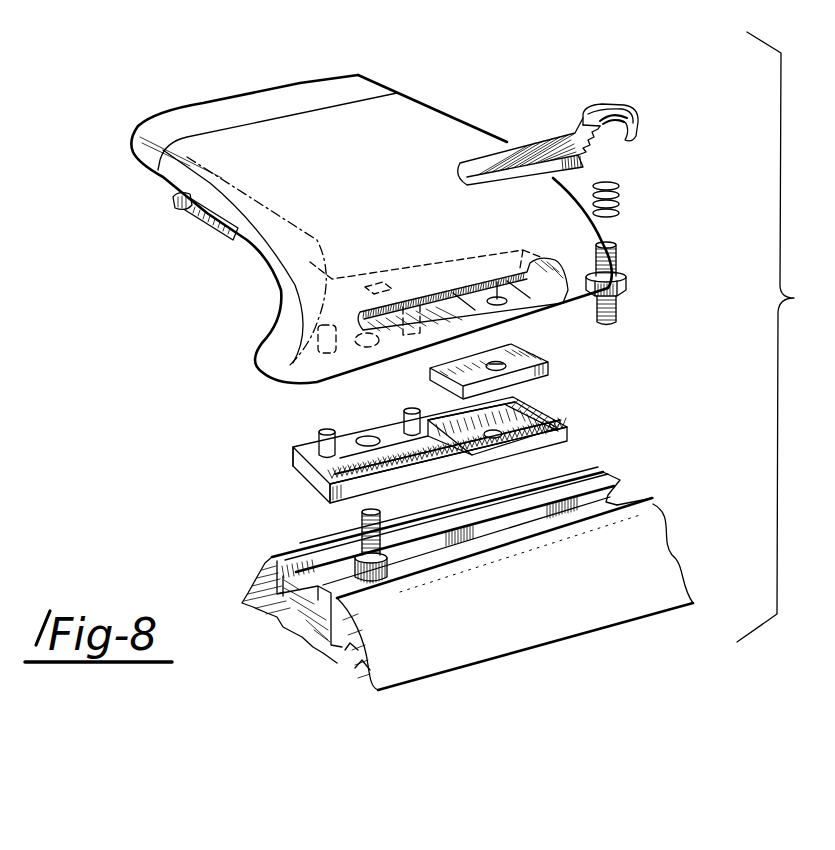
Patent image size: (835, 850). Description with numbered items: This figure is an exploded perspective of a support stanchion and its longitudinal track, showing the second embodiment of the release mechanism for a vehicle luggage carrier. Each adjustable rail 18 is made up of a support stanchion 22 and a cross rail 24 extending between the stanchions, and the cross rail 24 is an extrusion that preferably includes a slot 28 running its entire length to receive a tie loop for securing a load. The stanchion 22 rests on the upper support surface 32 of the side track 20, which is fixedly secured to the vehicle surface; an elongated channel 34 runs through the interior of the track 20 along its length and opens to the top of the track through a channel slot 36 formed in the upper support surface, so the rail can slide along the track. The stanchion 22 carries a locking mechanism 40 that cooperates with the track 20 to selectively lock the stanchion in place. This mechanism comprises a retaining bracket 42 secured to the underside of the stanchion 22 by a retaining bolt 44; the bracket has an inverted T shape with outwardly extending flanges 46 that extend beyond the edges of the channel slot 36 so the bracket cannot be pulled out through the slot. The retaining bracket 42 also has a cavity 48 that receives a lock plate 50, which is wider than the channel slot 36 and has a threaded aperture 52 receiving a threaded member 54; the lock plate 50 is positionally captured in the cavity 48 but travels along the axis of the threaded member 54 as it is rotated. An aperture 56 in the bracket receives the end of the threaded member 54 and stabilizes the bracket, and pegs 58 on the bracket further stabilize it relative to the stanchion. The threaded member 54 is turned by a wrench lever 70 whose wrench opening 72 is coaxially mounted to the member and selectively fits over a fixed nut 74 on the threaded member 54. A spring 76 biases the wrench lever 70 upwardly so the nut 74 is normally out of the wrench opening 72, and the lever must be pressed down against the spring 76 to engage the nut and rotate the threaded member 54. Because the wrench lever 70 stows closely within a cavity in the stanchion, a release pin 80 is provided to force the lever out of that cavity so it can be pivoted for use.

The adjustable rail 18 is at (357, 68).
The side track 20 is at (690, 568).
The support stanchion 22 is at (442, 127).
The cross rail 24 is at (187, 115).
The slot 28 is at (441, 294).
The upper support surface 32 is at (607, 473).
The elongated channel 34 is at (312, 613).
The channel slot 36 is at (627, 503).
The locking mechanism 40 is at (632, 410).
The retaining bracket 42 is at (292, 465).
The retaining bolt 44 is at (397, 570).
The flanges 46 is at (282, 453).
The cavity 48 is at (527, 440).
The lock plate 50 is at (550, 372).
The threaded aperture 52 is at (432, 372).
The threaded member 54 is at (517, 260).
The aperture 56 is at (493, 445).
The pegs 58 is at (400, 412).
The wrench lever 70 is at (543, 123).
The wrench opening 72 is at (623, 141).
The fixed nut 74 is at (628, 280).
The spring 76 is at (619, 212).
The release pin 80 is at (174, 219).